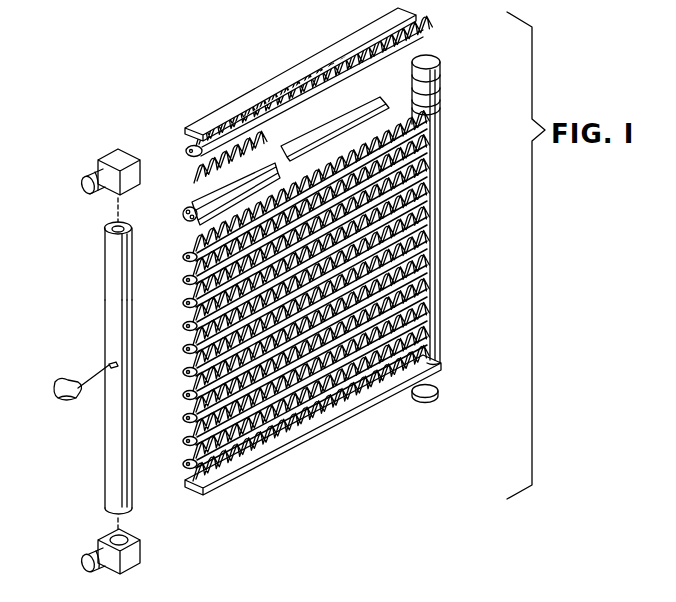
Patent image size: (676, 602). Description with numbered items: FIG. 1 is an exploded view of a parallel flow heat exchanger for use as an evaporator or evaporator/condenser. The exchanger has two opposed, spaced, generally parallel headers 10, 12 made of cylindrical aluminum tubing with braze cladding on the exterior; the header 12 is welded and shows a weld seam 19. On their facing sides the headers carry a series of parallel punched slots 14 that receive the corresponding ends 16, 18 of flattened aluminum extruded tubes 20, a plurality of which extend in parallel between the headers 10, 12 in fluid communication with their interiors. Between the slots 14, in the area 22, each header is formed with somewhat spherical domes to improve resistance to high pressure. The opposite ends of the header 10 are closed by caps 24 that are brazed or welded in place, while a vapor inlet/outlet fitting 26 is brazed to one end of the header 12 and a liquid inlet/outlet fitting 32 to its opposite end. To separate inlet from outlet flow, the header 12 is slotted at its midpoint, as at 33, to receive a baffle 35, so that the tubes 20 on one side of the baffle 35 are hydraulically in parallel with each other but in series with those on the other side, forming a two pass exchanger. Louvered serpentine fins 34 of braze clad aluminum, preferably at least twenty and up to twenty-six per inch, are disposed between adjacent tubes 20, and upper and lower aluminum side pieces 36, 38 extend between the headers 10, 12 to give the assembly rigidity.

The header 10 is at (275, 258).
The header 12 is at (117, 250).
The slots 14 is at (426, 108).
The tube end 16 is at (310, 140).
The tube end 18 is at (187, 207).
The weld seam 19 is at (108, 318).
The flattened tubes 20 is at (192, 273).
The domed area 22 is at (424, 118).
The caps 24 is at (432, 63).
The vapor inlet/outlet fitting 26 is at (140, 556).
The liquid inlet/outlet fitting 32 is at (113, 160).
The slot 33 is at (110, 364).
The baffle 35 is at (58, 402).
The louvered serpentine fins 34 is at (198, 242).
The upper side piece 36 is at (268, 90).
The lower side piece 38 is at (282, 450).